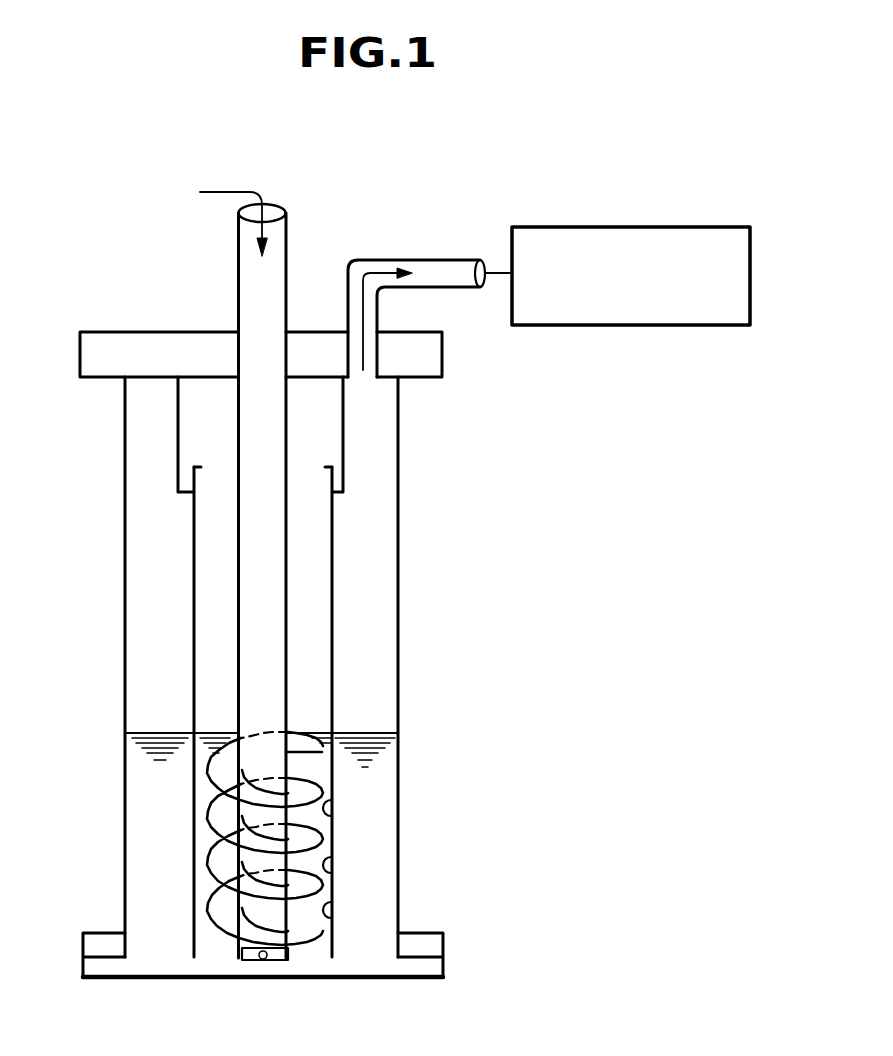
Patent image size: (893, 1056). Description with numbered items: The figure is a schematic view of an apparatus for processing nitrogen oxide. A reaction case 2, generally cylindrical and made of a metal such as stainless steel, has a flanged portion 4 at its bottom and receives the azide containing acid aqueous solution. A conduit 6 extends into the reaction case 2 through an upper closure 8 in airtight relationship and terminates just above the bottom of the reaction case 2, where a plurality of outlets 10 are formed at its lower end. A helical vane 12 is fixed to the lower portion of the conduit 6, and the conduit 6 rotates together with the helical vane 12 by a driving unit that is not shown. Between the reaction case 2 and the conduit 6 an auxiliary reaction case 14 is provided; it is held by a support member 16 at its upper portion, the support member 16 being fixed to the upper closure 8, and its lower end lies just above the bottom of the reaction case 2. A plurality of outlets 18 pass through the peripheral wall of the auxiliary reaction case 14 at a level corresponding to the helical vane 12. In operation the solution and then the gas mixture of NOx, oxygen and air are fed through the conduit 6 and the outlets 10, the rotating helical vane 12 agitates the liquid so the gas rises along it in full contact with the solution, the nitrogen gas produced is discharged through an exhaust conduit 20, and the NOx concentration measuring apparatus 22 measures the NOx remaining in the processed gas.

The reaction case 2 is at (398, 623).
The flanged portion 4 is at (436, 945).
The conduit 6 is at (286, 232).
The upper closure 8 is at (135, 347).
The outlets 10 is at (262, 960).
The helical vane 12 is at (208, 830).
The auxiliary reaction case 14 is at (333, 552).
The support member 16 is at (178, 437).
The outlets 18 is at (336, 863).
The exhaust conduit 20 is at (440, 259).
The NOx concentration measuring apparatus 22 is at (572, 227).